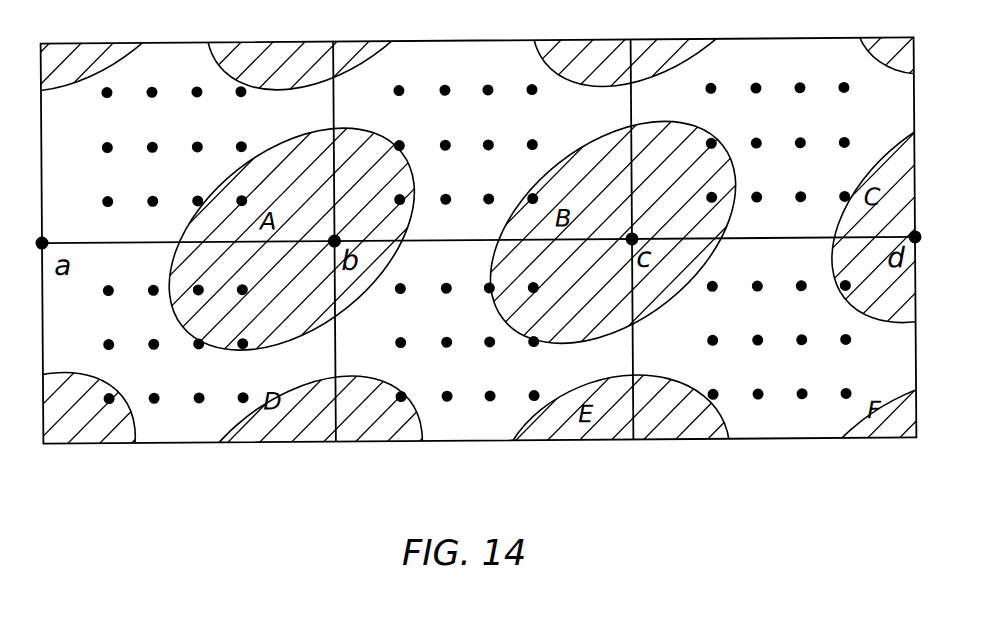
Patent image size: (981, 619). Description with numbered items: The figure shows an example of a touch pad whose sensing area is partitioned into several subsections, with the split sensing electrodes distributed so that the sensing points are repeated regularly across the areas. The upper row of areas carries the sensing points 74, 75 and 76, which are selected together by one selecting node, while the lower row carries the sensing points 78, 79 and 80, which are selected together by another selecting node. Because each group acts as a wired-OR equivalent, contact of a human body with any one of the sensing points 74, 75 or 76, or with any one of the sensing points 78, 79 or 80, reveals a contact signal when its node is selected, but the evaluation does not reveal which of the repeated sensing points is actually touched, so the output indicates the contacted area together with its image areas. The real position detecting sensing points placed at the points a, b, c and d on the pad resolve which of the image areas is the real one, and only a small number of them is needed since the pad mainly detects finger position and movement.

The sensing point 74 is at (173, 146).
The sensing point 75 is at (462, 144).
The sensing point 76 is at (776, 142).
The sensing point 78 is at (176, 344).
The sensing point 79 is at (464, 342).
The sensing point 80 is at (775, 340).